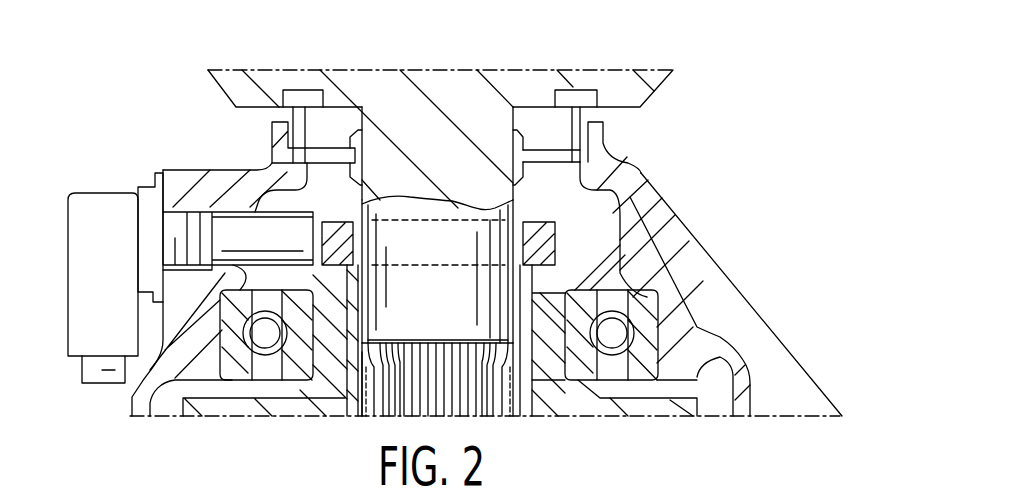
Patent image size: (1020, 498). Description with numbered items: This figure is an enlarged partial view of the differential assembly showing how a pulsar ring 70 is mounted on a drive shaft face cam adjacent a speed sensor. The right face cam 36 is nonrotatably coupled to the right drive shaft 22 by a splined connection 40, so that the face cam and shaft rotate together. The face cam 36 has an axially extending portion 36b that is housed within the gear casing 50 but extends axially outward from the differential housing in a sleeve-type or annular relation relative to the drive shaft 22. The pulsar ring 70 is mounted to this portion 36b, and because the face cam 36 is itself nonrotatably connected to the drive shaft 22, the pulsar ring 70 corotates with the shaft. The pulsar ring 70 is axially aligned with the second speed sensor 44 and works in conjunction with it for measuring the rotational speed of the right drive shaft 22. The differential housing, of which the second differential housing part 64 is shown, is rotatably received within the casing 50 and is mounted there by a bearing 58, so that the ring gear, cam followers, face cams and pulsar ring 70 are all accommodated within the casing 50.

The right drive shaft 22 is at (459, 78).
The right face cam 36 is at (526, 401).
The axially extending portion of the face cam 36b is at (363, 230).
The splined connection 40 is at (372, 416).
The second speed sensor 44 is at (80, 286).
The gear casing 50 is at (660, 253).
The bearing 58 is at (650, 297).
The second differential housing part 64 is at (288, 406).
The pulsar ring 70 is at (642, 172).